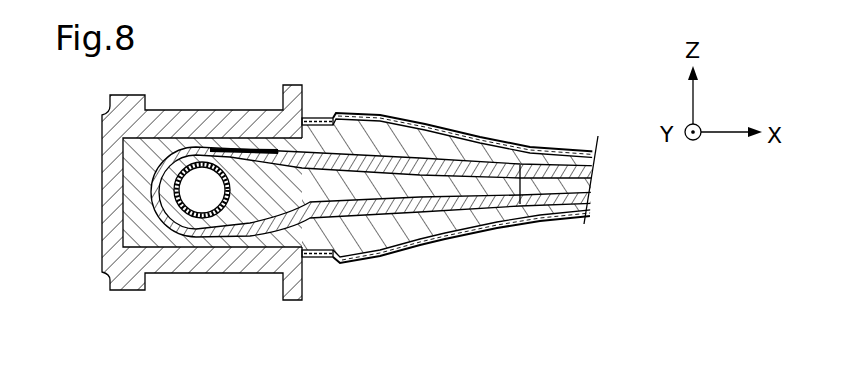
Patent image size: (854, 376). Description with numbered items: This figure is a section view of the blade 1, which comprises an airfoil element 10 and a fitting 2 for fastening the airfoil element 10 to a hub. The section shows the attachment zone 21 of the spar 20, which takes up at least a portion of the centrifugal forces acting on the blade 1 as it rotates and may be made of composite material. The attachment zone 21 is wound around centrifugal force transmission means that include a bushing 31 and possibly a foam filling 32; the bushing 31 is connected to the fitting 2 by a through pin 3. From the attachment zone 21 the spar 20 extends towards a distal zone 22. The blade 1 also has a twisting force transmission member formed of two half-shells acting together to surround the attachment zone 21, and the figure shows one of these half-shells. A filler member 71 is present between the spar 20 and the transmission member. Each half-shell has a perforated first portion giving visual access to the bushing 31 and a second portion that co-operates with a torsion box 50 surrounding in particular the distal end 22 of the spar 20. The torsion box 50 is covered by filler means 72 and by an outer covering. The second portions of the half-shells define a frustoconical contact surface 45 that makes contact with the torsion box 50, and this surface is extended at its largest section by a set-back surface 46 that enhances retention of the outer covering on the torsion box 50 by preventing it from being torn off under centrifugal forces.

The blade 1 is at (596, 110).
The fitting 2 is at (113, 282).
The through pin 3 is at (203, 182).
The airfoil element 10 is at (565, 262).
The spar 20 is at (590, 183).
The attachment zone 21 is at (169, 294).
The distal zone 22 is at (503, 166).
The bushing 31 is at (210, 205).
The foam filling 32 is at (397, 187).
The frustoconical contact surface 45 is at (497, 228).
The set-back surface 46 is at (320, 266).
The torsion box 50 is at (445, 238).
The filler member 71 is at (470, 158).
The filler means 72 is at (414, 123).